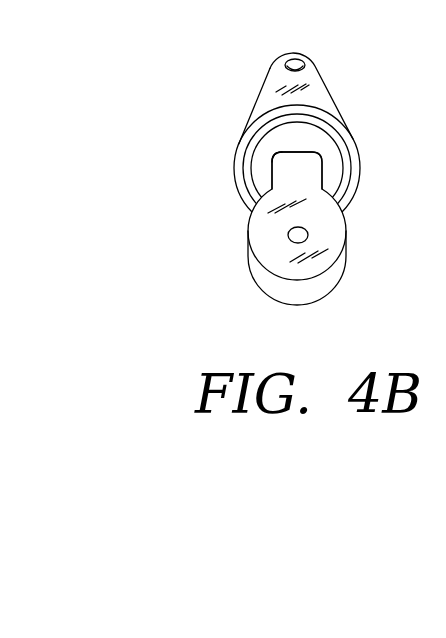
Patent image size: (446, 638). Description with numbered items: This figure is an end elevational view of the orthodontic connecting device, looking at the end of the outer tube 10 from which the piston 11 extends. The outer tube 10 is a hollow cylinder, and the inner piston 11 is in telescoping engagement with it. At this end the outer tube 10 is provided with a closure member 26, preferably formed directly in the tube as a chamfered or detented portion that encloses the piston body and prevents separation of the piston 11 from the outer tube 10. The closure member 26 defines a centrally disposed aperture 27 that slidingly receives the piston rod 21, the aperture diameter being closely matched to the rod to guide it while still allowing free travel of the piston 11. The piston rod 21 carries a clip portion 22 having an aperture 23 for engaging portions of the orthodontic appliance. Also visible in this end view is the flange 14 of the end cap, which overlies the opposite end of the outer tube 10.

The outer tube 10 is at (330, 133).
The piston 11 is at (342, 196).
The flange 14 is at (353, 168).
The piston rod 21 is at (295, 166).
The clip portion 22 is at (345, 231).
The aperture 23 is at (288, 236).
The closure member 26 is at (287, 137).
The aperture 27 is at (271, 146).